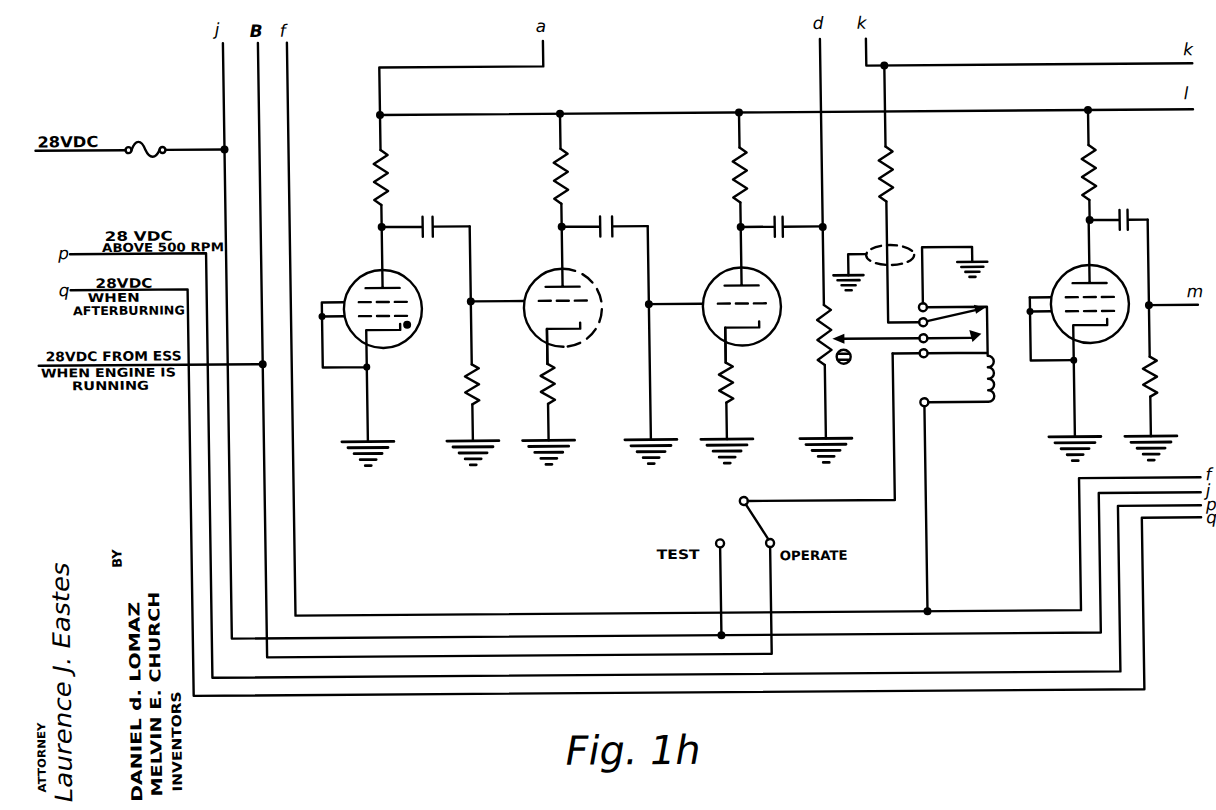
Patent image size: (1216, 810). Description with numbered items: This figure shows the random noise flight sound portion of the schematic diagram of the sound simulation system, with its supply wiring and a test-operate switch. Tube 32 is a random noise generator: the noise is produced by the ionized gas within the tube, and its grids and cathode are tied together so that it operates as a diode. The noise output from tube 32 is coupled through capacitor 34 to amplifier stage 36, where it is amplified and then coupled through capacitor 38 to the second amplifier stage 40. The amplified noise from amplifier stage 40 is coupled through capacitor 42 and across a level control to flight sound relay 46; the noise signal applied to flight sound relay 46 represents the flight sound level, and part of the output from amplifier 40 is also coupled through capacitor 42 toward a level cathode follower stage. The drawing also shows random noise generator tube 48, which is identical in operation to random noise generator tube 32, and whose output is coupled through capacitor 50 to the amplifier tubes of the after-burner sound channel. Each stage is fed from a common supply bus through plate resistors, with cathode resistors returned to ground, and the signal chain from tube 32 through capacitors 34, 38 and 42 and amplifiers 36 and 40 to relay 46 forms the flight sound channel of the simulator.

The random noise generator tube 32 is at (359, 271).
The capacitor 34 is at (431, 224).
The amplifier stage 36 is at (548, 270).
The capacitor 38 is at (611, 224).
The second amplifier stage 40 is at (759, 341).
The capacitor 42 is at (777, 215).
The flight sound relay 46 is at (990, 324).
The random noise generator tube 48 is at (1061, 367).
The capacitor 50 is at (1082, 270).